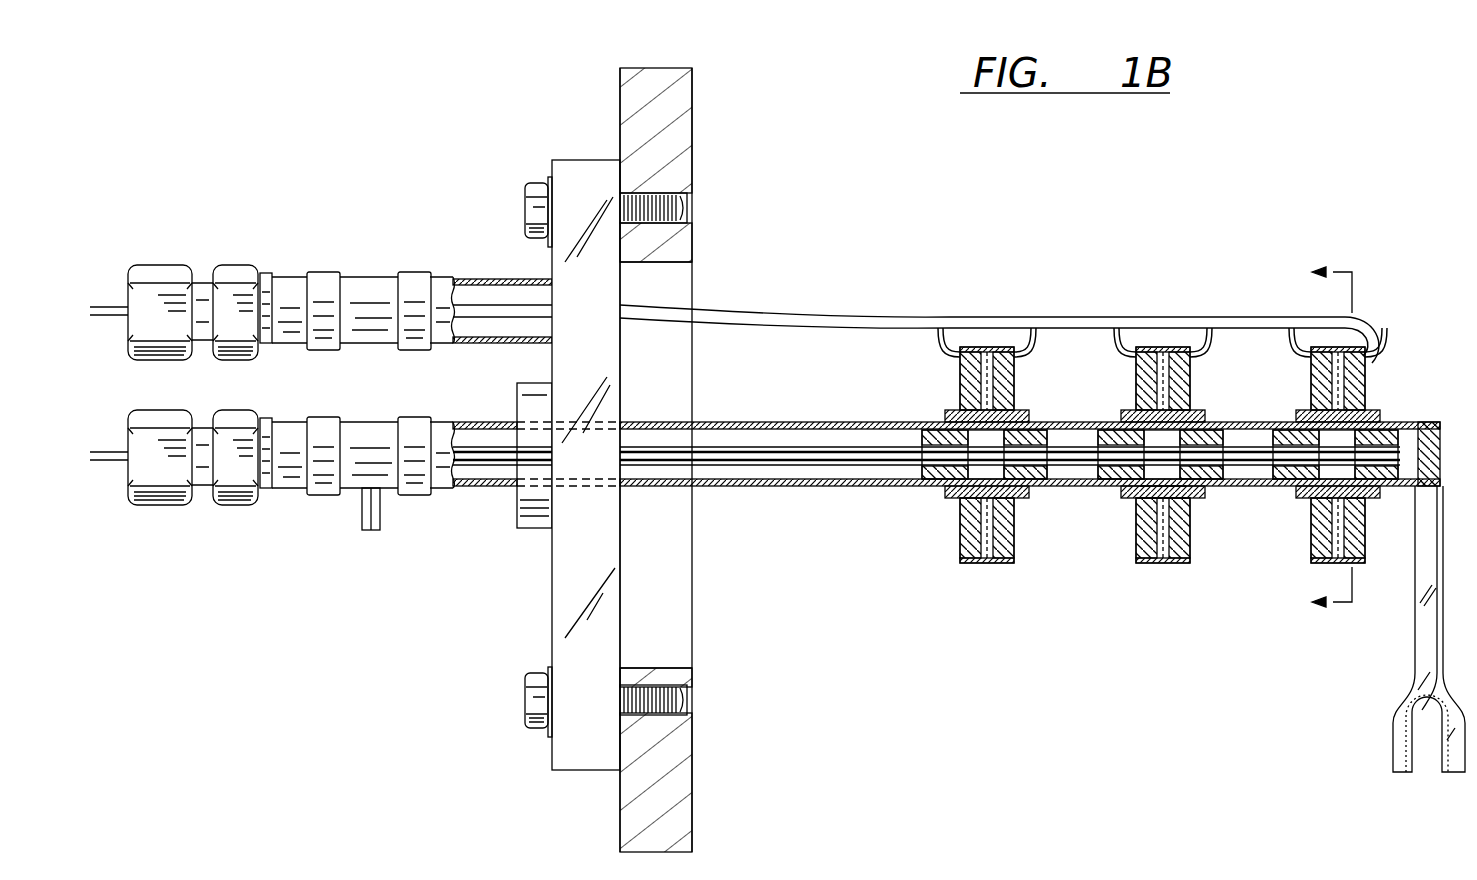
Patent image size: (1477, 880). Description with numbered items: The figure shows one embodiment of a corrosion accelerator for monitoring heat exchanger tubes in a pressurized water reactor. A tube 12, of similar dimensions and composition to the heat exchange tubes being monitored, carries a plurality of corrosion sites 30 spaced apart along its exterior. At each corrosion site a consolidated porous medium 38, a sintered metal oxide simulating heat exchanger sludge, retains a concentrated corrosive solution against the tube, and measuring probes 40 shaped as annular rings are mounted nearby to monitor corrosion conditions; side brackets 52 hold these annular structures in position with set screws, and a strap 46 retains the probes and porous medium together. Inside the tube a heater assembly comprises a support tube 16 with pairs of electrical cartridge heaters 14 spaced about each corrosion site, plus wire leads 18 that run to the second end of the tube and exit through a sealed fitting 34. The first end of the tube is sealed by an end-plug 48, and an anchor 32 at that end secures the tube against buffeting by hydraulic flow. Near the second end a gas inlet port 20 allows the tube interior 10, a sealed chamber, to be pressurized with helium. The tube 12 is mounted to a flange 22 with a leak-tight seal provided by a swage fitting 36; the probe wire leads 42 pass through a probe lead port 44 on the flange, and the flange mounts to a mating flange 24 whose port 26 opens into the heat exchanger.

The tube interior 10 is at (927, 243).
The tube 12 is at (777, 423).
The electrical cartridge heaters 14 is at (937, 484).
The support tube 16 is at (840, 485).
The wire leads 18 is at (738, 448).
The gas inlet port 20 is at (367, 530).
The flange 22 is at (552, 160).
The mating flange 24 is at (692, 157).
The port 26 is at (692, 295).
The corrosion sites 30 is at (995, 408).
The anchor 32 is at (1397, 758).
The sealed fitting 34 is at (173, 410).
The swage fitting 36 is at (508, 527).
The consolidated porous medium 38 is at (1152, 497).
The measuring probes 40 is at (1180, 388).
The probe wire leads 42 is at (488, 308).
The probe lead port 44 is at (178, 265).
The strap 46 is at (995, 563).
The end-plug 48 is at (1433, 437).
The side brackets 52 is at (953, 410).